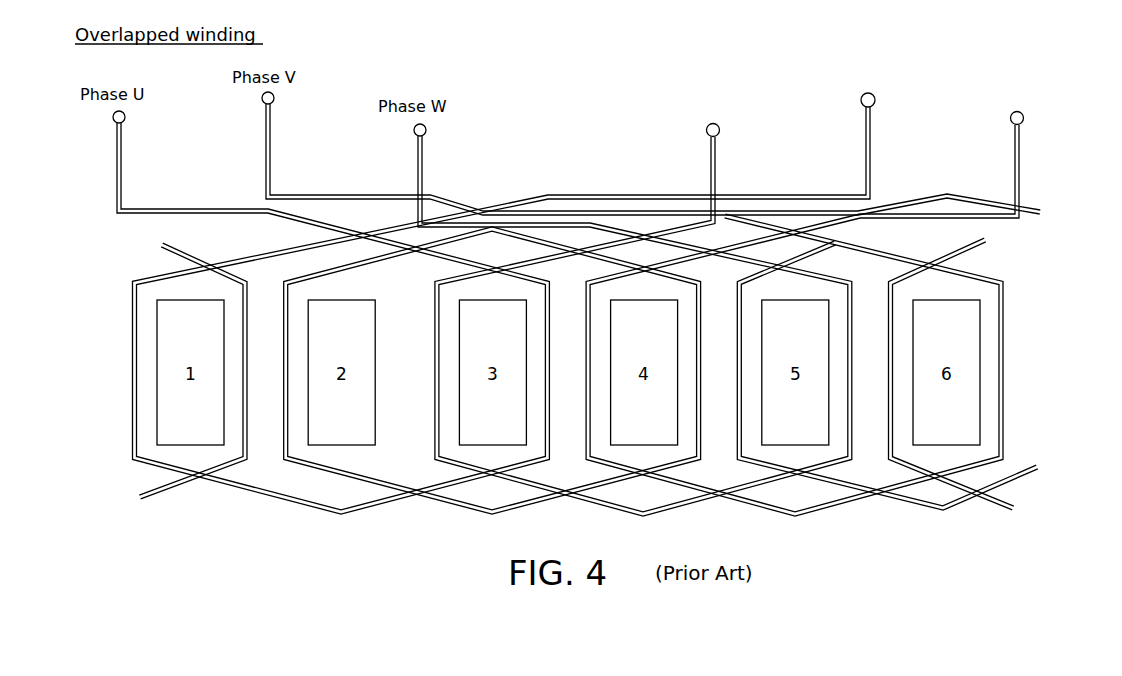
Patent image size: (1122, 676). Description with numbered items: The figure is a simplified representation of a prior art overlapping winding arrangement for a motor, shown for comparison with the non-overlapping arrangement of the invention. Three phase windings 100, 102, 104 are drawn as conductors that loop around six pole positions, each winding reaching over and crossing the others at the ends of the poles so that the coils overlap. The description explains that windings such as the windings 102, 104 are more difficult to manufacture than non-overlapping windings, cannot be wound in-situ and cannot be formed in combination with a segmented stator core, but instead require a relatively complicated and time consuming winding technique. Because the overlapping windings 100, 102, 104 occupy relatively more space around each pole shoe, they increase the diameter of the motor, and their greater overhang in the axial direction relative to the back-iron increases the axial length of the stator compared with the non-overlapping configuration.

The phase U winding lead 100 is at (123, 158).
The winding 102 is at (273, 158).
The winding 104 is at (425, 158).